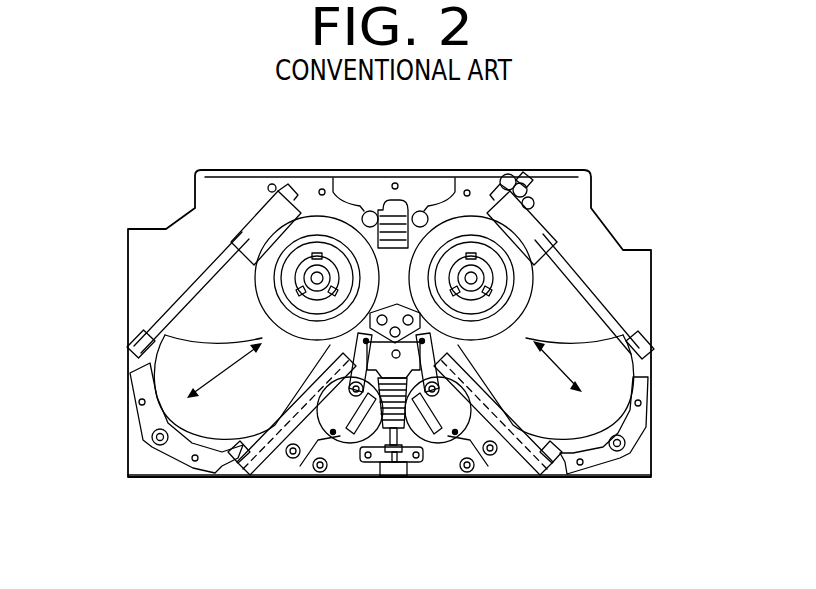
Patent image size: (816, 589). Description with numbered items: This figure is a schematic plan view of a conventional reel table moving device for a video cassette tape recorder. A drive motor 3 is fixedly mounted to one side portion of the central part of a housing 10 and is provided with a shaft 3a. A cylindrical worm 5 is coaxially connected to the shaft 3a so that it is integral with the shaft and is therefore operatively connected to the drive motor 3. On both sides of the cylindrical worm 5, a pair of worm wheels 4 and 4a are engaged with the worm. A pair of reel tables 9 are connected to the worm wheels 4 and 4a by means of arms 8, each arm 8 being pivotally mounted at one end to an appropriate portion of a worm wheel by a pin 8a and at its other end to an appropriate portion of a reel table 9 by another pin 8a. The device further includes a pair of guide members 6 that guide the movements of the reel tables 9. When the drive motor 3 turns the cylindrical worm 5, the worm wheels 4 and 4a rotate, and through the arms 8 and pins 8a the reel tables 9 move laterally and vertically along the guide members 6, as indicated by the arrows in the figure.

The drive motor 3 is at (389, 479).
The shaft 3a is at (401, 465).
The worm wheel 4 is at (358, 446).
The worm wheel 4a is at (452, 446).
The cylindrical worm 5 is at (383, 460).
The guide member 6 is at (177, 302).
The arm 8 is at (302, 464).
The pin 8a is at (152, 384).
The reel table 9 is at (232, 235).
The housing 10 is at (619, 471).